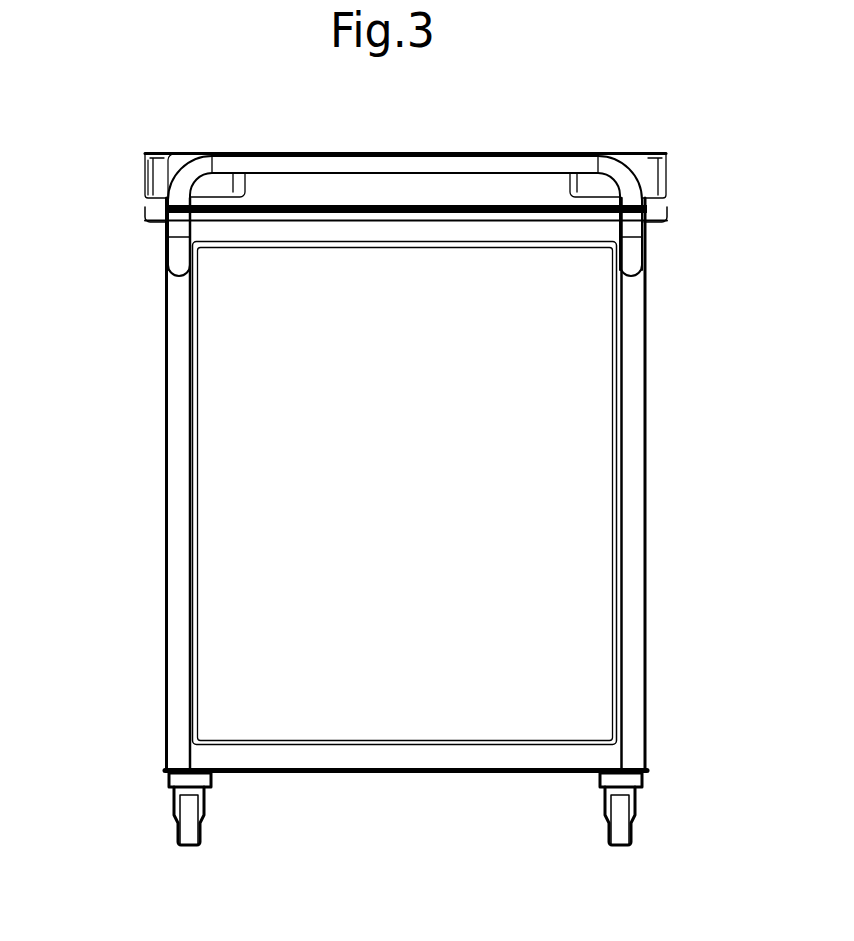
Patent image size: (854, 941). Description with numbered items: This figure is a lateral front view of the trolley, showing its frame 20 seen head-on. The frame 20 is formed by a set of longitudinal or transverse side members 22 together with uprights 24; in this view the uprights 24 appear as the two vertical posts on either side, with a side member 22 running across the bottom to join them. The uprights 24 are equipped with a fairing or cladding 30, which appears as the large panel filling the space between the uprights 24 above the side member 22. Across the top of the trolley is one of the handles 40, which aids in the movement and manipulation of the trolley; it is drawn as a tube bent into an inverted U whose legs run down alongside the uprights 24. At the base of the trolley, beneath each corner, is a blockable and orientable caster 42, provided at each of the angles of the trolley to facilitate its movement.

The frame 20 is at (145, 355).
The side members 22 is at (403, 755).
The uprights 24 is at (178, 540).
The fairing or cladding 30 is at (503, 393).
The handles 40 is at (297, 165).
The blockable and orientable caster 42 is at (165, 847).